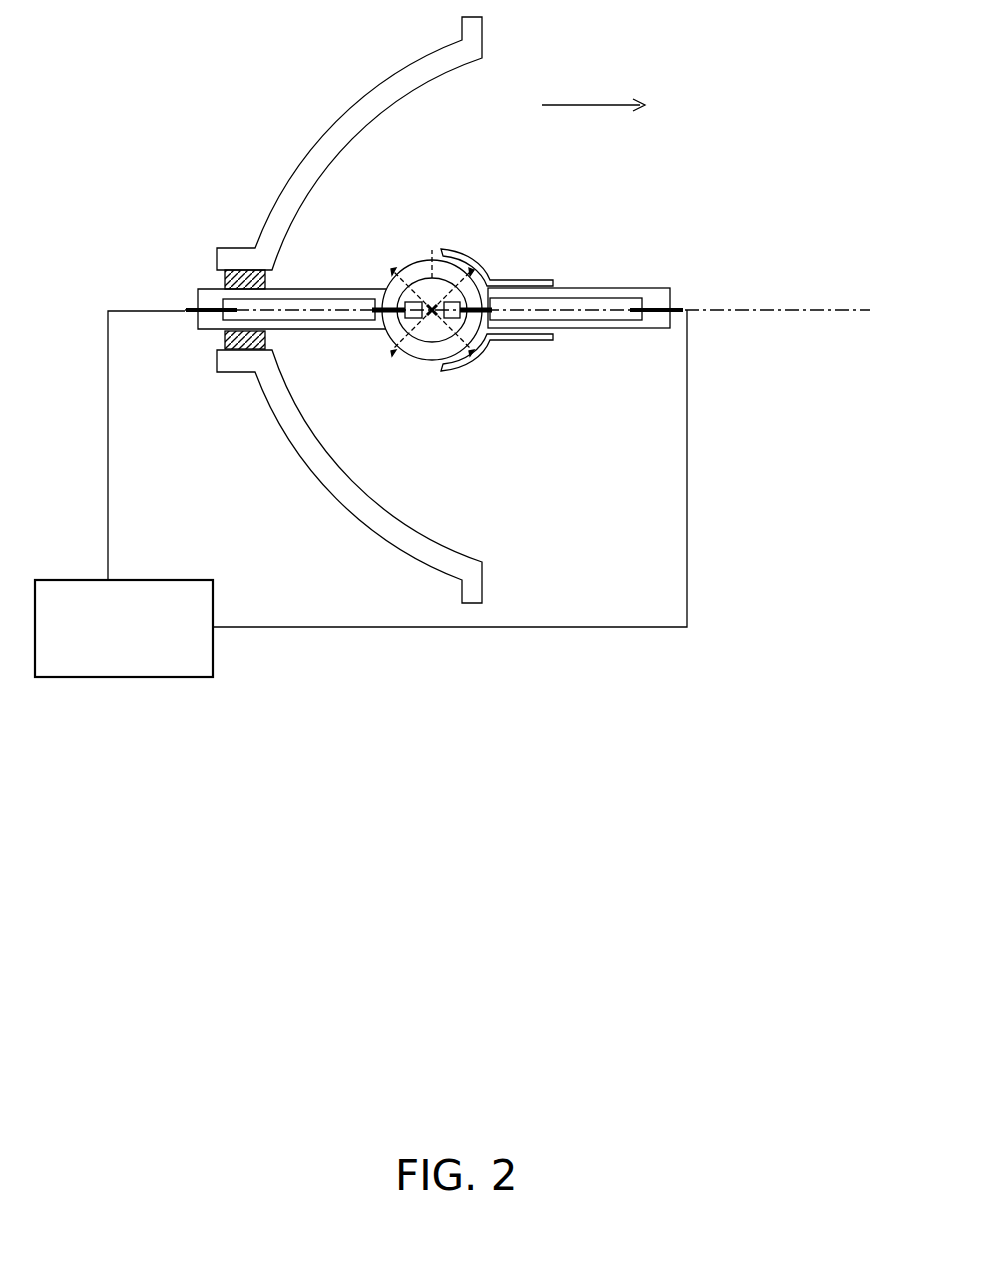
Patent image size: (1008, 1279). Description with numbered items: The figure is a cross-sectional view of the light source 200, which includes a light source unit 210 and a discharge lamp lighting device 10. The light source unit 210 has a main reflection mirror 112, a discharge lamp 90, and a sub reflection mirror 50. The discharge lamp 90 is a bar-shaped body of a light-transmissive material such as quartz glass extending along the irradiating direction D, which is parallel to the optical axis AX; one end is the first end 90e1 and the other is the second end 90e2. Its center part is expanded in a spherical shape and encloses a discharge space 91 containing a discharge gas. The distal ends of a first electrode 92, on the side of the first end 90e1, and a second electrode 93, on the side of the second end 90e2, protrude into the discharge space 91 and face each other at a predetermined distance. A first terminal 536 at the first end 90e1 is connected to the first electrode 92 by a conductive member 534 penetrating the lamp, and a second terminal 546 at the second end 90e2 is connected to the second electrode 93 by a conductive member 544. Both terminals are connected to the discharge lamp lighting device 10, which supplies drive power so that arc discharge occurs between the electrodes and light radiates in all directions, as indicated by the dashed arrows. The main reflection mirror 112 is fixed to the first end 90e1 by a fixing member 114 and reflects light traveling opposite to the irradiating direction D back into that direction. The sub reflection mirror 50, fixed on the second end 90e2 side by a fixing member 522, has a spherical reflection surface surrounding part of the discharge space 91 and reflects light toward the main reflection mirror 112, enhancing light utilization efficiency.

The light source 200 is at (798, 48).
The light source unit 210 is at (245, 104).
The main reflection mirror 112 is at (343, 110).
The fixing member 114 is at (222, 288).
The discharge lamp 90 is at (424, 262).
The sub reflection mirror 50 is at (462, 257).
The fixing member 522 is at (565, 287).
The first end 90e1 is at (216, 287).
The second end 90e2 is at (645, 288).
The first terminal 536 is at (190, 318).
The conductive member 534 is at (316, 318).
The first electrode 92 is at (385, 340).
The second electrode 93 is at (478, 348).
The discharge space 91 is at (431, 327).
The conductive member 544 is at (580, 318).
The second terminal 546 is at (678, 314).
The discharge lamp lighting device 10 is at (155, 578).
The optical axis AX is at (797, 303).
The irradiating direction D is at (604, 106).